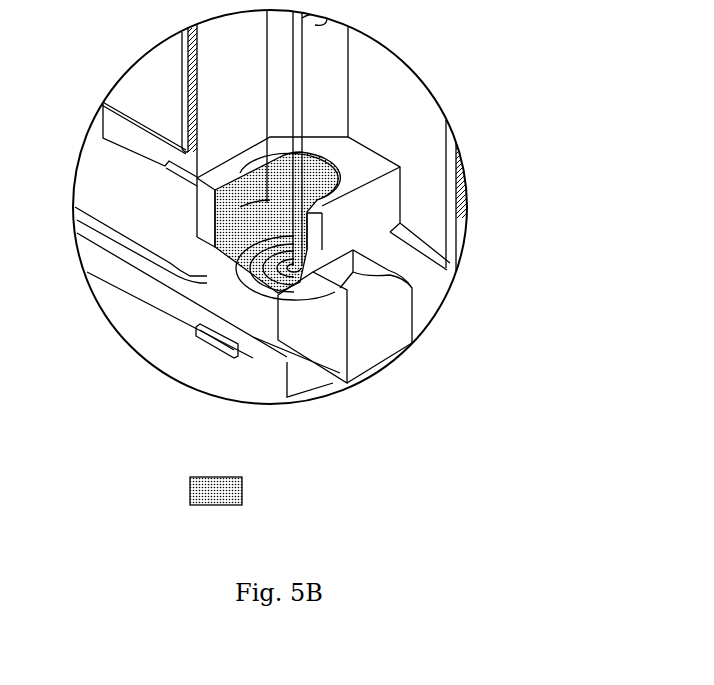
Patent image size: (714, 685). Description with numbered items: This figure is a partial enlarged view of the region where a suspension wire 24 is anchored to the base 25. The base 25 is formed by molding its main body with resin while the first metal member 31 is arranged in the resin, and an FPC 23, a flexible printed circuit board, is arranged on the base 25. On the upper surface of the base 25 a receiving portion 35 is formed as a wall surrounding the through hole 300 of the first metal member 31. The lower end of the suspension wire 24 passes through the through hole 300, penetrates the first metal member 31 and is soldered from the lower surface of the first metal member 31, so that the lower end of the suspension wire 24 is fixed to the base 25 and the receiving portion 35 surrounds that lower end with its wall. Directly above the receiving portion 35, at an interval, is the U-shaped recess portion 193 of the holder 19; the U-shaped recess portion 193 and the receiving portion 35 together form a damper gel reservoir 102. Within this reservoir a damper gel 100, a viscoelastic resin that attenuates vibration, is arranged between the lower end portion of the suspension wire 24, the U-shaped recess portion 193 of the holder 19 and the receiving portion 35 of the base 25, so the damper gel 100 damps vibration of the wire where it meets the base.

The suspension wire 24 is at (300, 96).
The damper gel 100 is at (254, 167).
The FPC 23 is at (150, 212).
The base 25 is at (135, 280).
The through hole 300 is at (247, 250).
The first metal member 31 is at (217, 350).
The receiving portion 35 is at (263, 286).
The U-shaped recess portion 193 is at (350, 235).
The holder 19 is at (452, 271).
The damper gel reservoir 102 is at (217, 460).